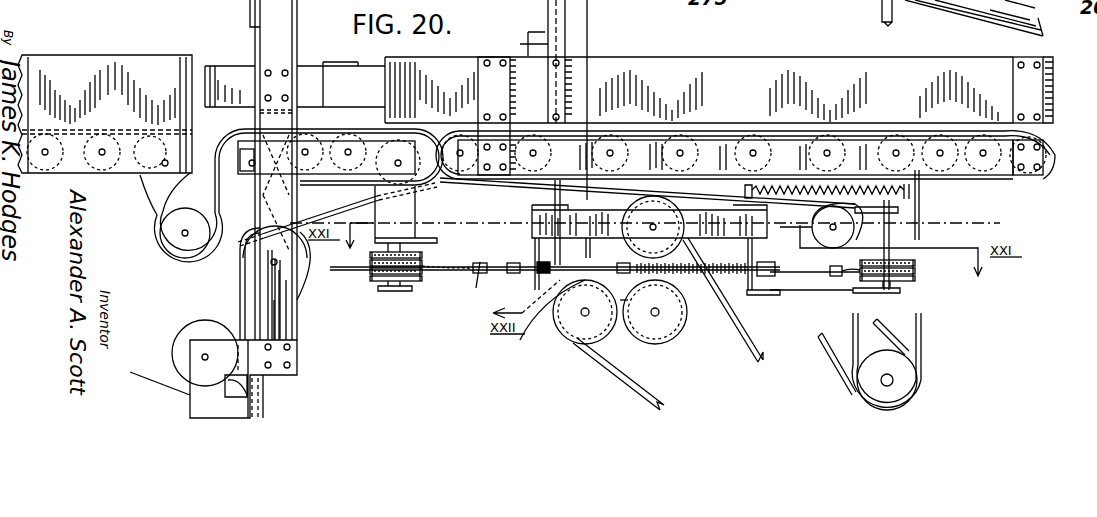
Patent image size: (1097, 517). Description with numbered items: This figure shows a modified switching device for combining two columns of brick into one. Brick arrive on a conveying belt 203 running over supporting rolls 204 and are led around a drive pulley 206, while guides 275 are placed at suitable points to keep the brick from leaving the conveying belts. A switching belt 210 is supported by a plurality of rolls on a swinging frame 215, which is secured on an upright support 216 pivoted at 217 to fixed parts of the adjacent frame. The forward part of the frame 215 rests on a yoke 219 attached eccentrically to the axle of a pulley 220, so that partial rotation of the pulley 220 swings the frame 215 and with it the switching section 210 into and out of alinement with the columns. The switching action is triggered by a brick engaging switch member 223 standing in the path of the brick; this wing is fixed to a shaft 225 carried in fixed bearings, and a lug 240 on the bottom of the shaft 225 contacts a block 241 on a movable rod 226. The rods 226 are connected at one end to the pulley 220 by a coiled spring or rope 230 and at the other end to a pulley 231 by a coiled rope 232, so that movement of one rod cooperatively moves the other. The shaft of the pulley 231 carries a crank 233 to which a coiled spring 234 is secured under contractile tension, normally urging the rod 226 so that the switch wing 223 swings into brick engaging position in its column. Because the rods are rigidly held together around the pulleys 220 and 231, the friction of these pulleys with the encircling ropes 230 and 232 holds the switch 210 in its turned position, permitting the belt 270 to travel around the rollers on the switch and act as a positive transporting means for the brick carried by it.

The guides 275 is at (65, 62).
The switching belt 210 is at (323, 128).
The switch member 223 is at (528, 44).
The belt 203 is at (648, 131).
The supporting rolls 204 is at (1048, 118).
The swinging frame 215 is at (298, 180).
The yoke 219 is at (403, 211).
The shaft 225 is at (552, 197).
The belt 270 is at (160, 214).
The pulley 220 is at (372, 278).
The coiled spring or rope 230 is at (435, 274).
The rods 226 is at (477, 288).
The lugs 240 is at (548, 264).
The blocks 241 is at (580, 273).
The upright support 216 is at (294, 318).
The pivot 217 is at (258, 391).
The crank 233 is at (912, 192).
The coiled spring 234 is at (860, 222).
The coiled rope 232 is at (907, 272).
The pulley 231 is at (905, 282).
The drive pulley 206 is at (903, 380).